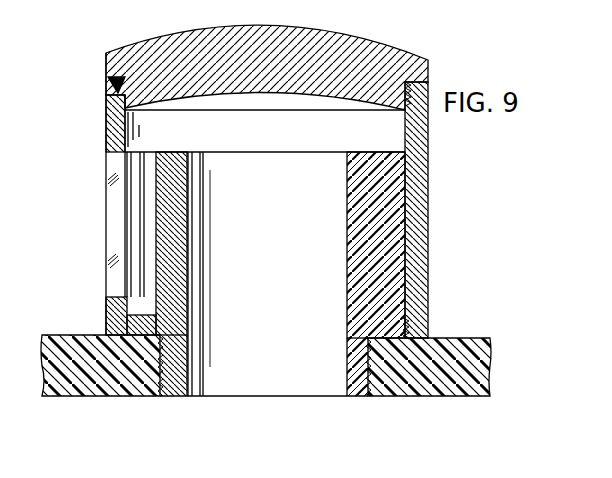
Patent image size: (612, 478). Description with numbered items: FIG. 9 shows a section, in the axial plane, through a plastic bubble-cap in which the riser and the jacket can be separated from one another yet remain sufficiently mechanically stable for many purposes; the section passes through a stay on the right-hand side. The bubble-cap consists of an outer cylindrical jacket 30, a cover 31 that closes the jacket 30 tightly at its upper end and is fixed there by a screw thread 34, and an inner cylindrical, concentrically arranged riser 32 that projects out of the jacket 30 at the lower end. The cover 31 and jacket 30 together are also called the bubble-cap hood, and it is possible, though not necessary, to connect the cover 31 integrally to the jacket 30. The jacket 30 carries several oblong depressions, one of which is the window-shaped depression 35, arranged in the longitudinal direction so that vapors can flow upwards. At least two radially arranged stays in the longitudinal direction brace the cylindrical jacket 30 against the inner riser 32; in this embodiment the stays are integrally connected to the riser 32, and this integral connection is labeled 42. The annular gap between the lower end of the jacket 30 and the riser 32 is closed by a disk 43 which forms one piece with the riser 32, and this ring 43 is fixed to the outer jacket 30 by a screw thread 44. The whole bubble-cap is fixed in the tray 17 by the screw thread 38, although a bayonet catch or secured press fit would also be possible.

The tray 17 is at (466, 398).
The cylindrical jacket 30 is at (106, 128).
The cover 31 is at (428, 61).
The inner riser 32 is at (178, 152).
The screw thread 34 is at (108, 86).
The oblong window-shaped depression 35 is at (140, 208).
The screw thread 38 is at (375, 386).
The integral connection 42 is at (378, 248).
The disk 43 is at (138, 330).
The screw thread 44 is at (407, 326).